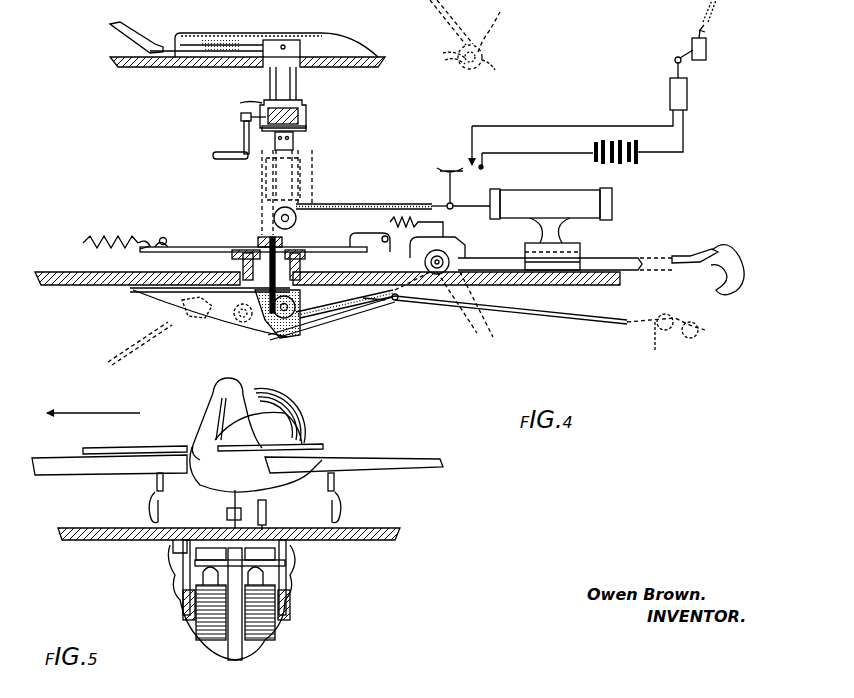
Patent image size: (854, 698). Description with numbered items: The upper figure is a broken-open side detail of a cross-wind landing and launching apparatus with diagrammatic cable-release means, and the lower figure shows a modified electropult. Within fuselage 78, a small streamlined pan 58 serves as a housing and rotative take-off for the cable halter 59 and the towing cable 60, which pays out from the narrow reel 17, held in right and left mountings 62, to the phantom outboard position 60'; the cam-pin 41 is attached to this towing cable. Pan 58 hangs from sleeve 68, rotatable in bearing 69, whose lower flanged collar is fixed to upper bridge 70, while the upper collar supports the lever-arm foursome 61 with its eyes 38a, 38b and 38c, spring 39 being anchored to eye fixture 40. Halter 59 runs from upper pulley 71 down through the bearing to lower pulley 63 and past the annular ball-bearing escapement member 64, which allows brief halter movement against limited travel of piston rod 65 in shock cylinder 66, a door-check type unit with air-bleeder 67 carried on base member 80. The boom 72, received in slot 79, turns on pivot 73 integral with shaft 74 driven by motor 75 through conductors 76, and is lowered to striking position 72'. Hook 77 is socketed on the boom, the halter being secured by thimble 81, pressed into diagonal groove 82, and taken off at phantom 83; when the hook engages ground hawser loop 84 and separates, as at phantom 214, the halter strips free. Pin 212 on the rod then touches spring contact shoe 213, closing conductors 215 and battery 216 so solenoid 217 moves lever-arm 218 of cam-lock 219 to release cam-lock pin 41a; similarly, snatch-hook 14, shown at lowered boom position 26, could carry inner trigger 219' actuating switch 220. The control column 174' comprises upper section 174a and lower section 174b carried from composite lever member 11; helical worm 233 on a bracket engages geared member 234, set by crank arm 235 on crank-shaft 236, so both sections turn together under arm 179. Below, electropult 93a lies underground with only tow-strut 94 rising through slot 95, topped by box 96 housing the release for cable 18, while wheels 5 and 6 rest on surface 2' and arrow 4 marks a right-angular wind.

In FIG. 4, the arm 179 is at (214, 45).
In FIG. 4, the upper section 174a is at (272, 78).
In FIG. 4, the control column 174' is at (319, 84).
In FIG. 4, the helical worm 233 is at (307, 117).
In FIG. 4, the lower section 174b is at (295, 143).
In FIG. 4, the geared member 234 is at (262, 103).
In FIG. 4, the crank-shaft 236 is at (241, 117).
In FIG. 4, the crank arm 235 is at (246, 134).
In FIG. 4, the inner trigger 219' is at (443, 63).
In FIG. 4, the boom position 26 is at (436, 12).
In FIG. 4, the switch 220 is at (468, 22).
In FIG. 4, the snatch-hook 14 is at (495, 70).
In FIG. 4, the conductors 215 is at (556, 126).
In FIG. 4, the battery 216 is at (615, 138).
In FIG. 4, the solenoid 217 is at (685, 95).
In FIG. 4, the lever-arm 218 is at (676, 57).
In FIG. 4, the cam-lock 219 is at (723, 38).
In FIG. 4, the cam-lock pin 41a is at (707, 55).
In FIG. 4, the spring contact shoe 213 is at (468, 160).
In FIG. 4, the upstanding pin 212 is at (440, 171).
In FIG. 4, the upper pulley 71 is at (303, 208).
In FIG. 4, the eye 38c is at (270, 228).
In FIG. 4, the lever-arm foursome 61 is at (240, 248).
In FIG. 4, the bearing 69 is at (243, 258).
In FIG. 4, the sleeve 68 is at (300, 266).
In FIG. 4, the spring 39 is at (101, 238).
In FIG. 4, the eye fixture 40 is at (141, 236).
In FIG. 4, the eye 38b is at (164, 237).
In FIG. 4, the eye 38a is at (378, 234).
In FIG. 4, the composite lever member 11 is at (378, 246).
In FIG. 4, the conductors 76 is at (410, 218).
In FIG. 4, the motor 75 is at (448, 237).
In FIG. 4, the shaft 74 is at (460, 248).
In FIG. 4, the piston rod 65 is at (478, 201).
In FIG. 4, the air-bleeder 67 is at (519, 206).
In FIG. 4, the shock cylinder 66 is at (613, 205).
In FIG. 4, the base member 80 is at (578, 247).
In FIG. 4, the fuselage 78 is at (79, 272).
In FIG. 4, the boom 72 is at (565, 284).
In FIG. 4, the pivot 73 is at (470, 272).
In FIG. 4, the slot 79 is at (528, 288).
In FIG. 4, the diagonal groove 82 is at (633, 280).
In FIG. 4, the thimble 81 is at (707, 252).
In FIG. 4, the hook 77 is at (746, 268).
In FIG. 4, the reel 17 is at (281, 338).
In FIG. 4, the lower pulley 63 is at (289, 341).
In FIG. 4, the pan 58 is at (331, 326).
In FIG. 4, the escapement member 64 is at (398, 305).
In FIG. 4, the upper bridge 70 is at (365, 300).
In FIG. 4, the cable halter 59 is at (560, 321).
In FIG. 4, the striking position 72' is at (483, 307).
In FIG. 4, the halter take-off 83 is at (441, 345).
In FIG. 4, the hook phantom position 214 is at (696, 321).
In FIG. 4, the ground hawser loop 84 is at (700, 338).
In FIG. 4, the cam-pin 41 is at (158, 305).
In FIG. 4, the cable outboard position 60' is at (122, 343).
In FIG. 4, the towing cable 60 is at (190, 329).
In FIG. 4, the mountings 62 is at (240, 325).
In FIG. 5, the arrow 4 is at (100, 413).
In FIG. 5, the wheels 5 is at (148, 510).
In FIG. 5, the cable 18 is at (230, 495).
In FIG. 5, the tow-strut 94 is at (226, 517).
In FIG. 5, the wheel 6 is at (265, 505).
In FIG. 5, the box 96 is at (267, 512).
In FIG. 5, the surface 2' is at (235, 516).
In FIG. 5, the slot 95 is at (178, 546).
In FIG. 5, the electropult 93a is at (262, 642).